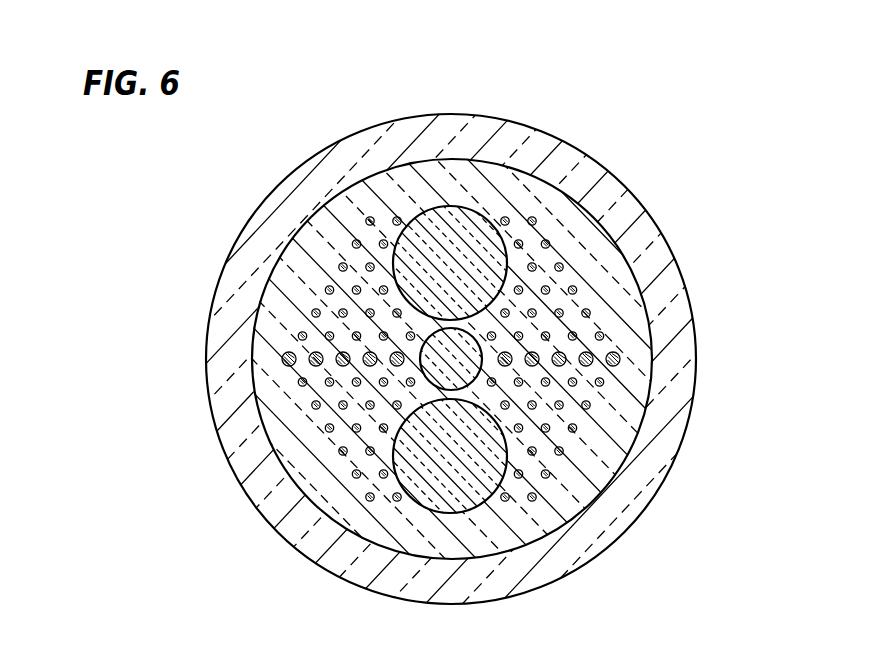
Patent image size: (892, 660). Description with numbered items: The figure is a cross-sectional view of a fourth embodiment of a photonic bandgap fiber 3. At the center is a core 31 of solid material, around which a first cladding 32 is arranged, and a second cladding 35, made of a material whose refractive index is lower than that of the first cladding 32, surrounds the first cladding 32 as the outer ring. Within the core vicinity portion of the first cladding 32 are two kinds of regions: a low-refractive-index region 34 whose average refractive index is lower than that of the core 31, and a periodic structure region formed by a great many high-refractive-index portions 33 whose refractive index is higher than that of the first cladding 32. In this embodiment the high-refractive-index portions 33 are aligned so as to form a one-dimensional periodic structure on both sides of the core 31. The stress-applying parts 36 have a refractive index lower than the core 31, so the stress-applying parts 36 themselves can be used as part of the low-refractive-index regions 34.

The photonic bandgap fiber 3 is at (582, 148).
The core 31 is at (433, 355).
The first cladding 32 is at (610, 248).
The high-refractive-index portions 33 is at (618, 361).
The low-refractive-index region 34 is at (562, 455).
The second cladding 35 is at (285, 218).
The stress-applying parts 36 is at (448, 463).